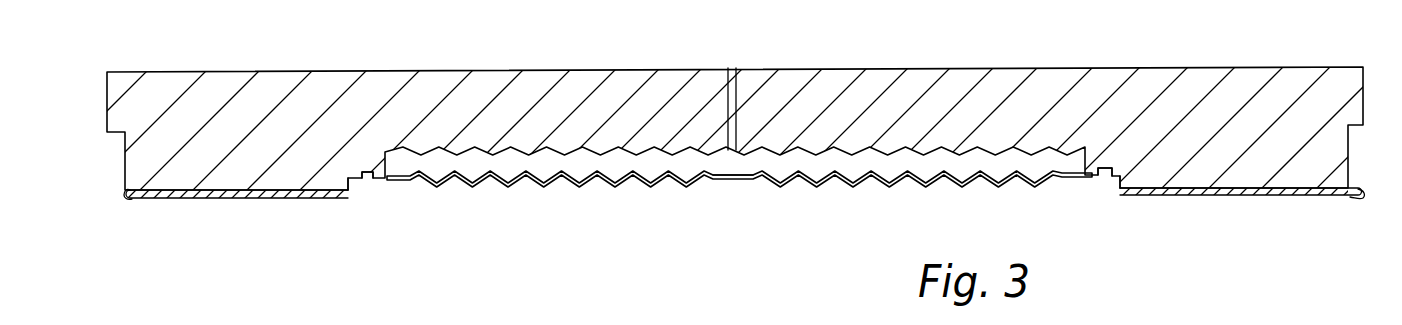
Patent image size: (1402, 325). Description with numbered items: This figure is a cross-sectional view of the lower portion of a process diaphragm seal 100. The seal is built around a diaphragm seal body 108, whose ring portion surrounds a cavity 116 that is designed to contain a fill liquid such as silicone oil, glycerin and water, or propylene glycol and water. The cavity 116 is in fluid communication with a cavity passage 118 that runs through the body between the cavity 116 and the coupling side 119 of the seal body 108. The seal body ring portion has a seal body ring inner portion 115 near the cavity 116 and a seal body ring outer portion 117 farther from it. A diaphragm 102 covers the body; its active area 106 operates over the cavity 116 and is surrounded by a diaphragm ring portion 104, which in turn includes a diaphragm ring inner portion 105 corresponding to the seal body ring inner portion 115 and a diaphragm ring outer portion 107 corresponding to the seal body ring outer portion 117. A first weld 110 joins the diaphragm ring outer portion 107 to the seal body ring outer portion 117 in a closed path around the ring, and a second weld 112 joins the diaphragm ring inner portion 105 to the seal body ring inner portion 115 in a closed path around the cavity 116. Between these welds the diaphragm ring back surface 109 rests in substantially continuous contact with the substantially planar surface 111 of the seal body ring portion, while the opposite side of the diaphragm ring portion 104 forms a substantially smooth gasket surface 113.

The process diaphragm seal 100 is at (1040, 50).
The diaphragm 102 is at (739, 207).
The diaphragm ring portion 104 is at (205, 200).
The diaphragm ring inner portion 105 is at (380, 188).
The active area 106 is at (670, 185).
The diaphragm ring outer portion 107 is at (129, 198).
The diaphragm seal body 108 is at (577, 80).
The diaphragm ring back surface 109 is at (266, 188).
The first weld 110 is at (122, 198).
The substantially planar surface 111 is at (1212, 184).
The second weld 112 is at (365, 183).
The substantially smooth gasket surface 113 is at (1345, 199).
The seal body ring inner portion 115 is at (375, 157).
The cavity 116 is at (781, 166).
The seal body ring outer portion 117 is at (122, 183).
The cavity passage 118 is at (737, 86).
The coupling side 119 is at (233, 175).